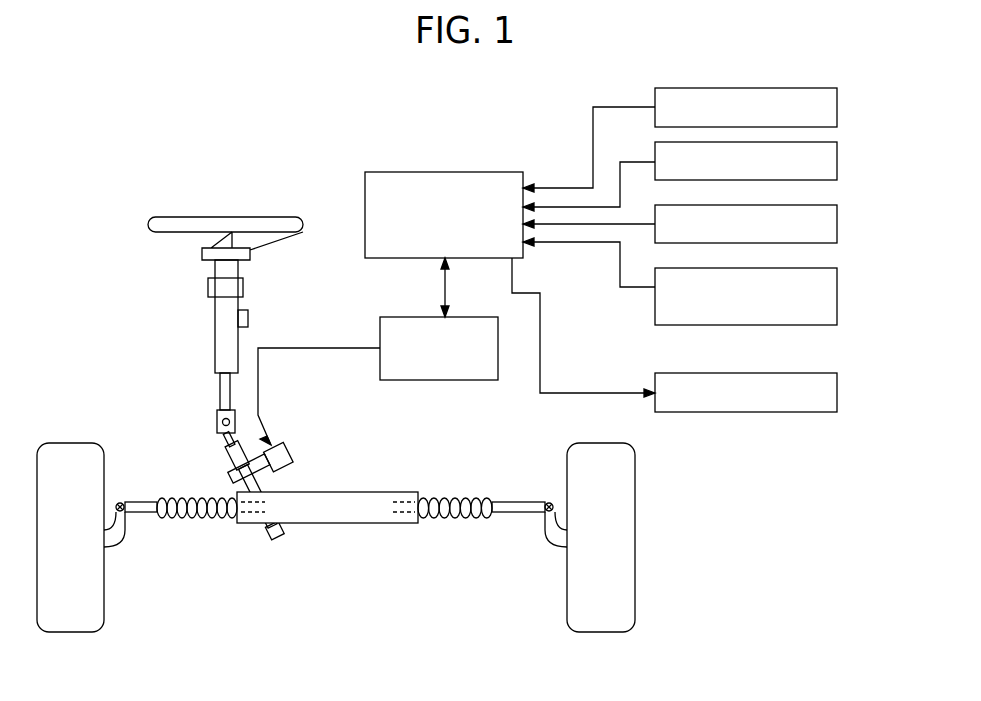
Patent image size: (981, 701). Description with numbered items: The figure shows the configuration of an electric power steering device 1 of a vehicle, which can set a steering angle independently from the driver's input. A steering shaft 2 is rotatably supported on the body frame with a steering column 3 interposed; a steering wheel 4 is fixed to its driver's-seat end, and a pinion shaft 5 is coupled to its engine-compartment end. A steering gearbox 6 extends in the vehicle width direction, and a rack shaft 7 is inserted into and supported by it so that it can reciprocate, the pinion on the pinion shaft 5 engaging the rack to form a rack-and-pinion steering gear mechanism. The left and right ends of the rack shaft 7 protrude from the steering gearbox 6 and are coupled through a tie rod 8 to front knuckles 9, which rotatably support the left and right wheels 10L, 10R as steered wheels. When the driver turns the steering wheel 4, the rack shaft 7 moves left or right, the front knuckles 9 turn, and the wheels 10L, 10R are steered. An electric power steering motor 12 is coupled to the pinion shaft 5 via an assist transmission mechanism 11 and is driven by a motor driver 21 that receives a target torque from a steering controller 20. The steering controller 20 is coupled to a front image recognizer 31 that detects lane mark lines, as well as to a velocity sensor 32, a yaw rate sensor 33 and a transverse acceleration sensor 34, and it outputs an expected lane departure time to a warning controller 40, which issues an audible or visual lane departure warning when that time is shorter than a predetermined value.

The electric power steering device 1 is at (128, 370).
The steering shaft 2 is at (220, 398).
The steering column 3 is at (215, 334).
The steering wheel 4 is at (228, 217).
The pinion shaft 5 is at (232, 456).
The steering gearbox 6 is at (350, 523).
The rack shaft 7 is at (402, 492).
The tie rod 8 is at (147, 513).
The front knuckle 9 is at (116, 547).
The right wheel 10R is at (70, 632).
The left wheel 10L is at (598, 632).
The assist transmission mechanism 11 is at (232, 480).
The electric power steering motor 12 is at (290, 456).
The steering controller 20 is at (448, 172).
The motor driver 21 is at (480, 317).
The front image recognizer 31 is at (837, 105).
The velocity sensor 32 is at (837, 162).
The yaw rate sensor 33 is at (837, 224).
The transverse acceleration sensor 34 is at (837, 288).
The warning controller 40 is at (837, 393).